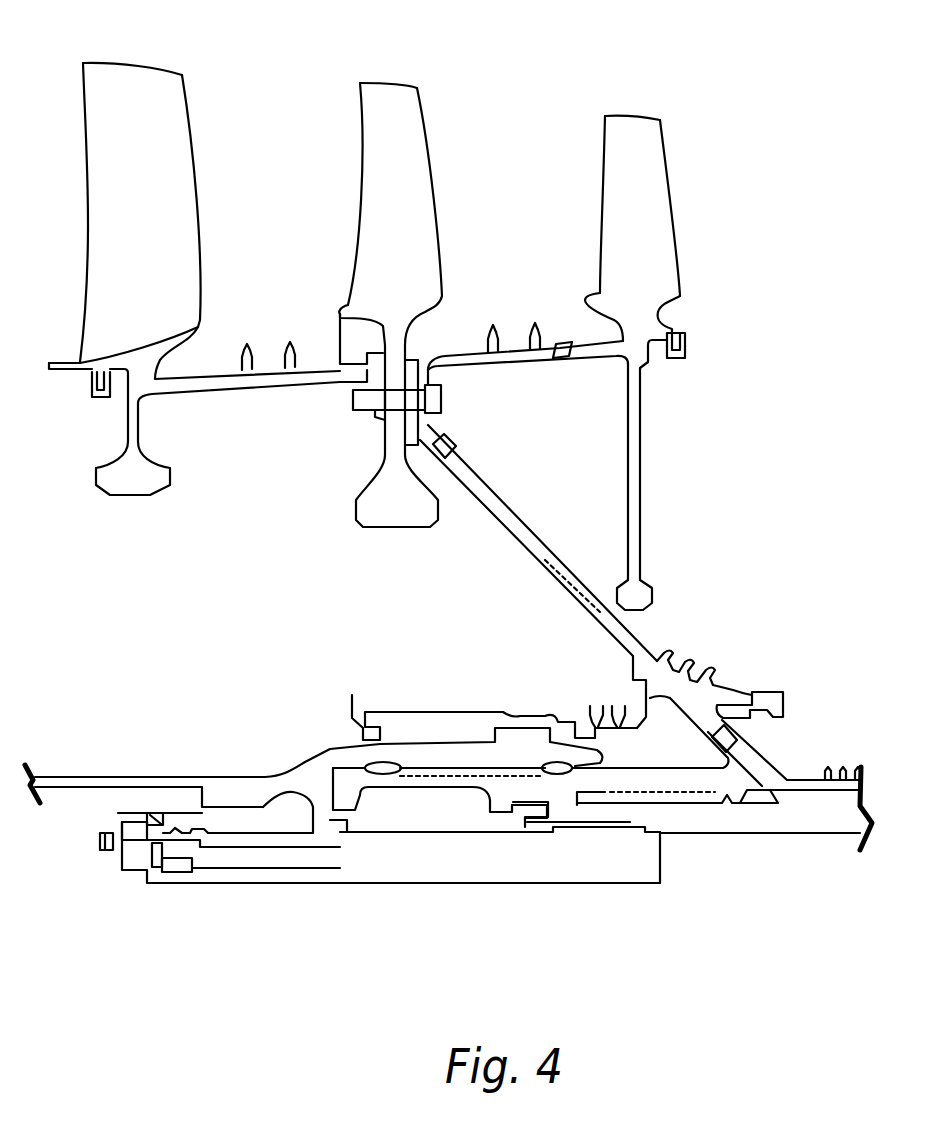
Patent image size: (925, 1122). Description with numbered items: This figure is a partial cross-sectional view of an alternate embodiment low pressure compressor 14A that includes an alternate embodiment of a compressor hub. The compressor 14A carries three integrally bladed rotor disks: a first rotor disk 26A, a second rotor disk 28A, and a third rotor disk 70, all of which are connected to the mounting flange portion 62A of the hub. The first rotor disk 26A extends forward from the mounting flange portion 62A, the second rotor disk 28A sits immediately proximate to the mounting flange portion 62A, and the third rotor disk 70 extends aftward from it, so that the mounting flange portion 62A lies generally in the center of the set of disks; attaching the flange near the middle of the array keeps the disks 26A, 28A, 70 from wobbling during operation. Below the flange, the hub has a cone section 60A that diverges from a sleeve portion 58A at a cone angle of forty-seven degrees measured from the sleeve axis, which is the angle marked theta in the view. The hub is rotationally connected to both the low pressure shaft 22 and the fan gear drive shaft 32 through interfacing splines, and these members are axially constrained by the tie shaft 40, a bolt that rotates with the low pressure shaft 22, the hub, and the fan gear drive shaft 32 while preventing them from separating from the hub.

The low pressure compressor 14A is at (730, 96).
The first rotor disk 26A is at (183, 172).
The second rotor disk 28A is at (413, 178).
The third rotor disk 70 is at (652, 178).
The mounting flange portion 62A is at (413, 420).
The cone section 60A is at (540, 553).
The sleeve portion 58A is at (717, 781).
The fan gear drive shaft 32 is at (303, 777).
The low pressure shaft 22 is at (700, 818).
The tie shaft 40 is at (403, 878).